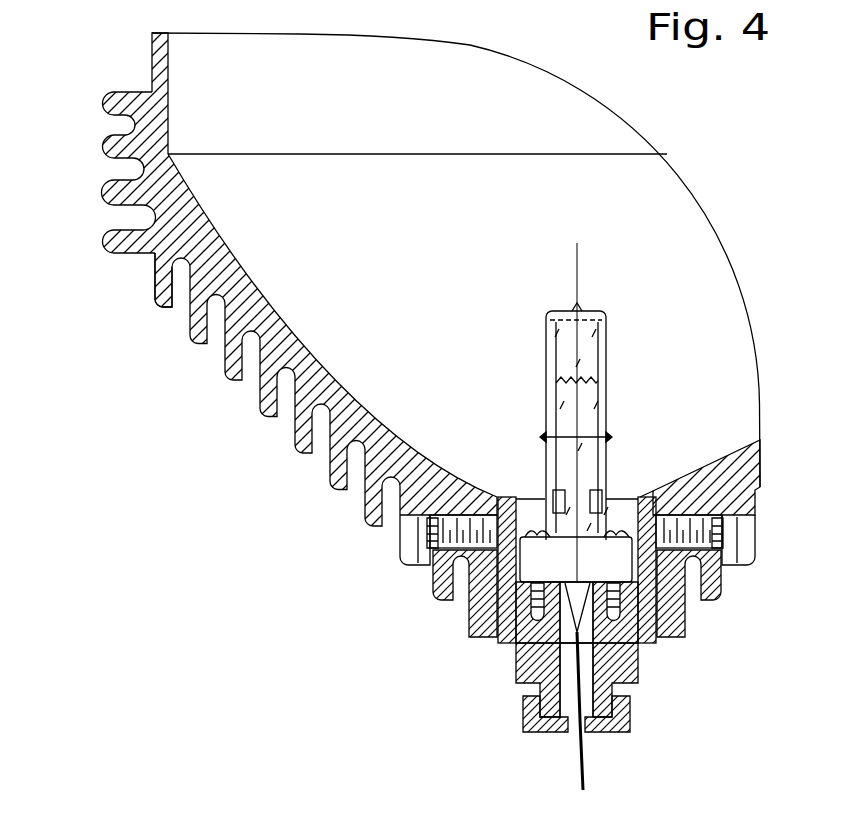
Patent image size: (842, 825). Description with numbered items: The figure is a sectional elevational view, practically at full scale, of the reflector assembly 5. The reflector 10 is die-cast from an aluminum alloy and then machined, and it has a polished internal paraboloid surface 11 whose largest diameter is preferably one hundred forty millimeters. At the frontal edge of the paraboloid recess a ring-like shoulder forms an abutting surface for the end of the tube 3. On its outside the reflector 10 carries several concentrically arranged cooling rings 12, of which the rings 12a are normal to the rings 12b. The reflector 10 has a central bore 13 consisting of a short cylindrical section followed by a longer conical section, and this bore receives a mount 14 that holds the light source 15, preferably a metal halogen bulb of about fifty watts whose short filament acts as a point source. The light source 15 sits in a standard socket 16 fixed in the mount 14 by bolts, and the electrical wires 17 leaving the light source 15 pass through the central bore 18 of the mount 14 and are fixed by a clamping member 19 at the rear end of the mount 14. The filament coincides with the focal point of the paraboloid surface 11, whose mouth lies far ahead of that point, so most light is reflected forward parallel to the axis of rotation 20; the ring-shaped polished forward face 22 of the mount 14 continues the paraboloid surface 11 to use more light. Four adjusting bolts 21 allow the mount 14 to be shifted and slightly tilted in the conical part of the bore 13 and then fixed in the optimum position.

The tube 3 is at (153, 48).
The reflector assembly 5 is at (273, 439).
The reflector 10 is at (752, 467).
The paraboloid surface 11 is at (280, 313).
The cooling rings 12 is at (155, 295).
The cooling rings 12a is at (103, 148).
The cooling rings 12b is at (200, 337).
The central bore 13 is at (652, 497).
The mount 14 is at (632, 668).
The light source 15 is at (600, 367).
The socket 16 is at (668, 637).
The electrical wires 17 is at (575, 770).
The central bore 18 is at (566, 670).
The clamping member 19 is at (523, 712).
The axis of rotation 20 is at (581, 263).
The adjusting bolts 21 is at (432, 556).
The forward face 22 is at (511, 492).